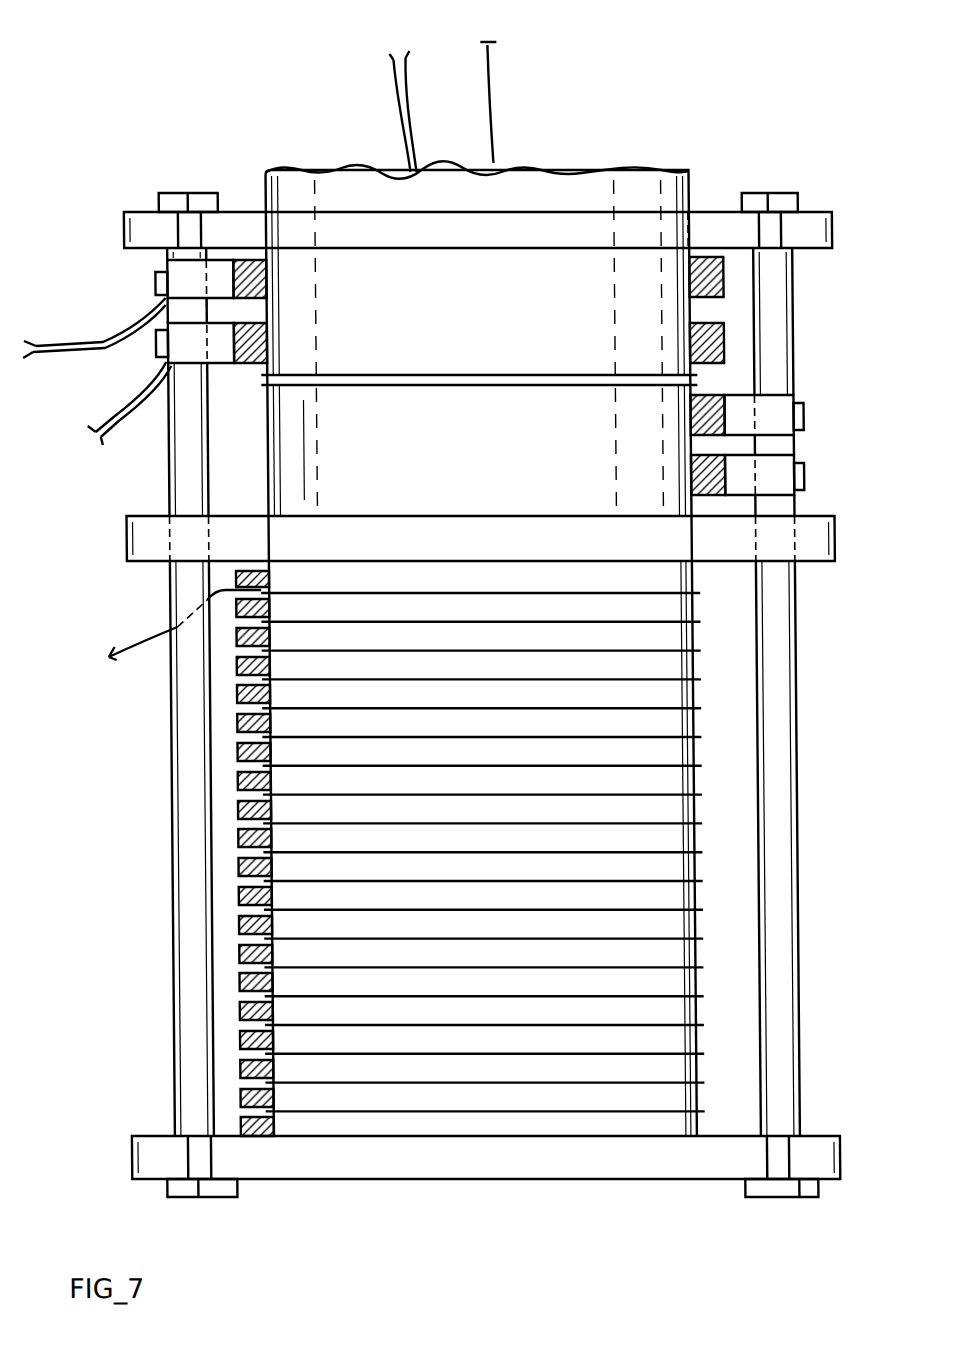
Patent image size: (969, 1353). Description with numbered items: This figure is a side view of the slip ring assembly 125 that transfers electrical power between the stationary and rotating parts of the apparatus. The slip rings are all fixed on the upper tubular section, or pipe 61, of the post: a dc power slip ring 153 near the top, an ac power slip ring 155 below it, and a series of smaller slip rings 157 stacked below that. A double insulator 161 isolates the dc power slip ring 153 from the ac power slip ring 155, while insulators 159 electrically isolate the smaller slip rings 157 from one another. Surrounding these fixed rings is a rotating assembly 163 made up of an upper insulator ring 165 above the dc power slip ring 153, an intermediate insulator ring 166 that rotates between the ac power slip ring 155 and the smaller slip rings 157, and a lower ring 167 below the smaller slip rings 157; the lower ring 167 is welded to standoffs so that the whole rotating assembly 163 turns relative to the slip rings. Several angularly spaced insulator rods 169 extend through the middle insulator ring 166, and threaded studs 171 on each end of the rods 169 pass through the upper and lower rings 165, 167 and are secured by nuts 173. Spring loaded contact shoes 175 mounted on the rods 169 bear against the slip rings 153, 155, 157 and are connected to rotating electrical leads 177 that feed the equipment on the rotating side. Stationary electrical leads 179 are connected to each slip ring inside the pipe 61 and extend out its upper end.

The upper tubular section 61 is at (589, 186).
The slip ring assembly 125 is at (792, 127).
The dc power slip ring 153 is at (669, 315).
The ac power slip ring 155 is at (301, 442).
The smaller slip rings 157 is at (667, 866).
The insulators 159 is at (632, 1078).
The double insulator 161 is at (607, 372).
The rotating assembly 163 is at (156, 157).
The upper insulator ring 165 is at (236, 222).
The intermediate insulator ring 166 is at (142, 542).
The lower ring 167 is at (146, 1147).
The insulator rods 169 is at (190, 961).
The threaded studs 171 is at (182, 232).
The nuts 173 is at (167, 197).
The spring loaded contact shoes 175 is at (182, 278).
The rotating electrical leads 177 is at (110, 417).
The stationary electrical leads 179 is at (481, 127).